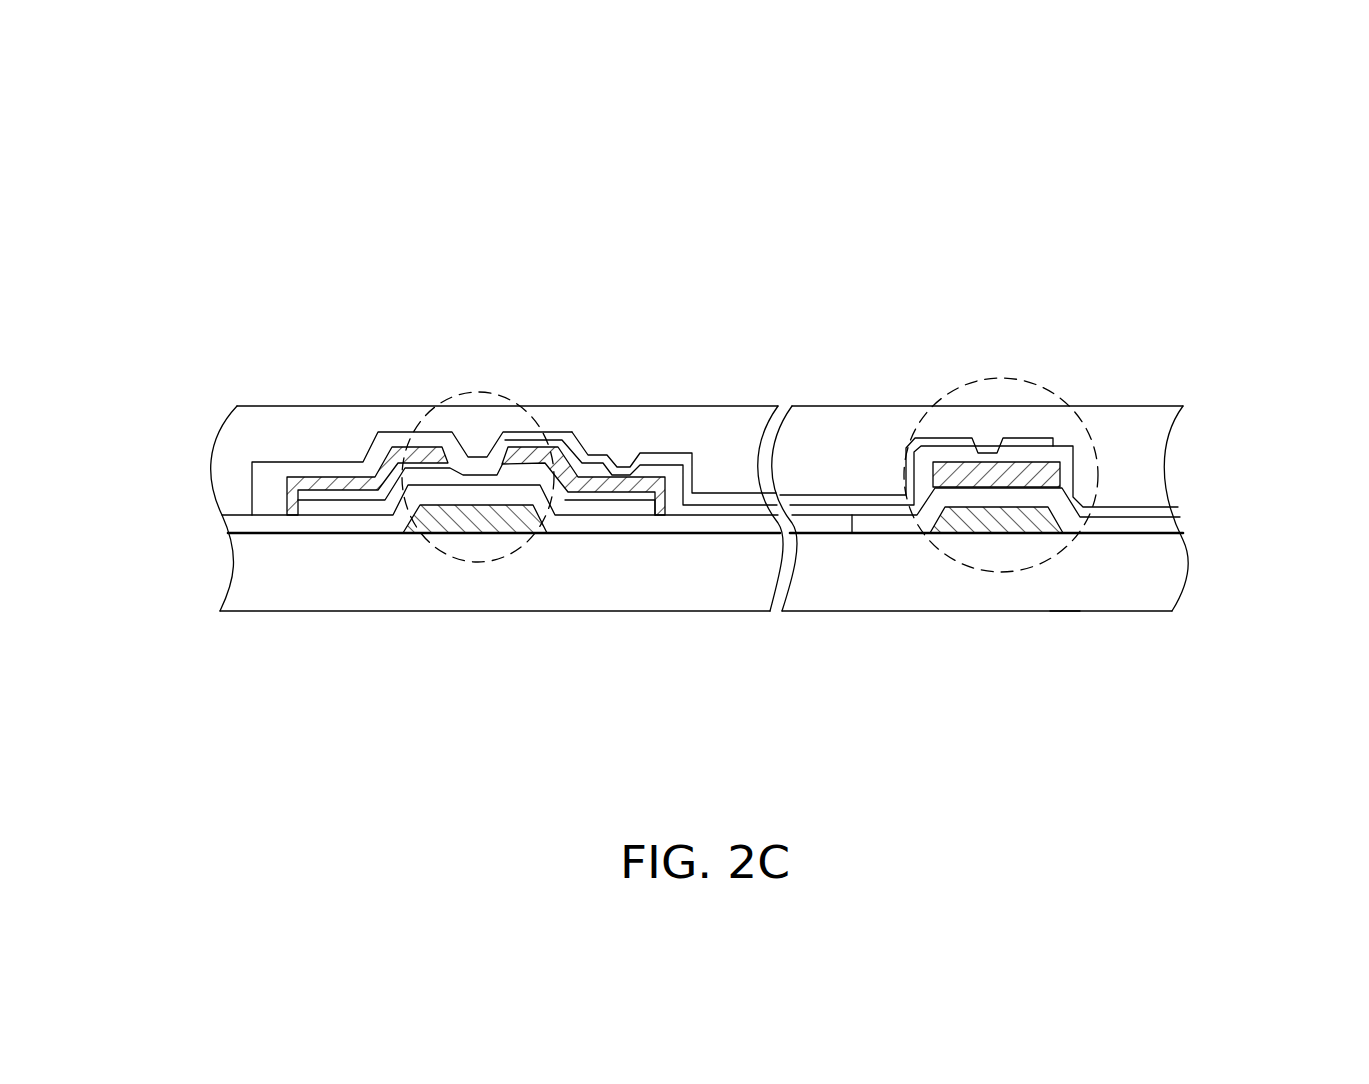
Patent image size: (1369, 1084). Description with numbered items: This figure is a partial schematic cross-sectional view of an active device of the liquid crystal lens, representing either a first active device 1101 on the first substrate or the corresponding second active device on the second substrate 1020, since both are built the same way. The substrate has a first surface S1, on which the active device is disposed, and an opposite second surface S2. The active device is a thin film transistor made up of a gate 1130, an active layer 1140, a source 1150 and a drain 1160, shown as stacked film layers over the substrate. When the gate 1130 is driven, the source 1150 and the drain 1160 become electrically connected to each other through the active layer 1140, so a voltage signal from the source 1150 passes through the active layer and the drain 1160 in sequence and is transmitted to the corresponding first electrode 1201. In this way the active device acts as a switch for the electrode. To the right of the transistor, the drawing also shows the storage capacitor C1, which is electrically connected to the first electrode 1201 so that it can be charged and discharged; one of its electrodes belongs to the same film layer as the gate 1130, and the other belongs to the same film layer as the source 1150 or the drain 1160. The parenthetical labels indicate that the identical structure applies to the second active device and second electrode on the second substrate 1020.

The second substrate 1020 is at (1155, 572).
The active layer 1140 is at (317, 507).
The gate 1130 is at (474, 518).
The source 1150 is at (287, 486).
The drain 1160 is at (617, 490).
The first electrode 1201 is at (623, 468).
The first active device 1101 is at (455, 398).
The storage capacitor C1 is at (1017, 378).
The first surface S1 is at (857, 530).
The second surface S2 is at (1060, 622).